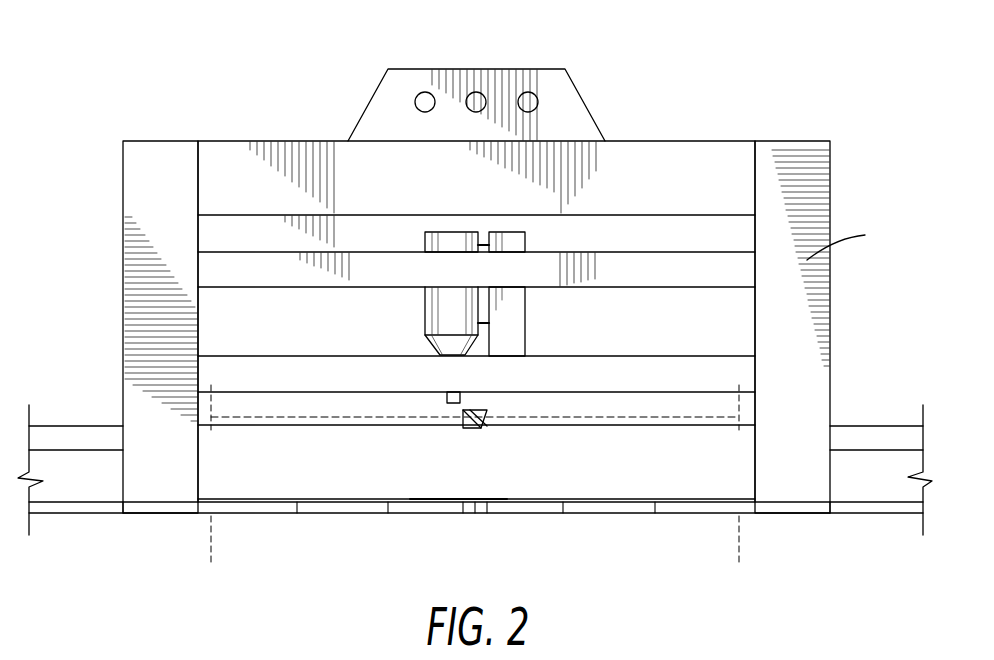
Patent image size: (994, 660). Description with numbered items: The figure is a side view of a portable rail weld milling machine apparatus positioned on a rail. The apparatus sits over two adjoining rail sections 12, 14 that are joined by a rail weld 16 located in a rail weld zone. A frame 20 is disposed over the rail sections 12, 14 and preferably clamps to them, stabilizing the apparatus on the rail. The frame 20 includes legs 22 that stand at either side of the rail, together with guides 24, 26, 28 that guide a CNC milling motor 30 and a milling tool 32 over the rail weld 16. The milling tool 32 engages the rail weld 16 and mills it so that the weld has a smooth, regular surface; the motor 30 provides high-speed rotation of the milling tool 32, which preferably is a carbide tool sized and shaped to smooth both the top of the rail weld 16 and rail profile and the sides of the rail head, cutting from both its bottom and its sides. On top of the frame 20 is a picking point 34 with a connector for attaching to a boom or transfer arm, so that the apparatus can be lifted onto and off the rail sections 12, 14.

The rail section 12 is at (70, 437).
The rail section 14 is at (878, 428).
The rail weld 16 is at (477, 421).
The frame 20 is at (805, 180).
The legs 22 is at (155, 178).
The guide 24 is at (693, 272).
The guide 26 is at (722, 375).
The guide 28 is at (528, 218).
The CNC milling motor 30 is at (428, 218).
The milling tool 32 is at (447, 404).
The picking point 34 is at (408, 83).